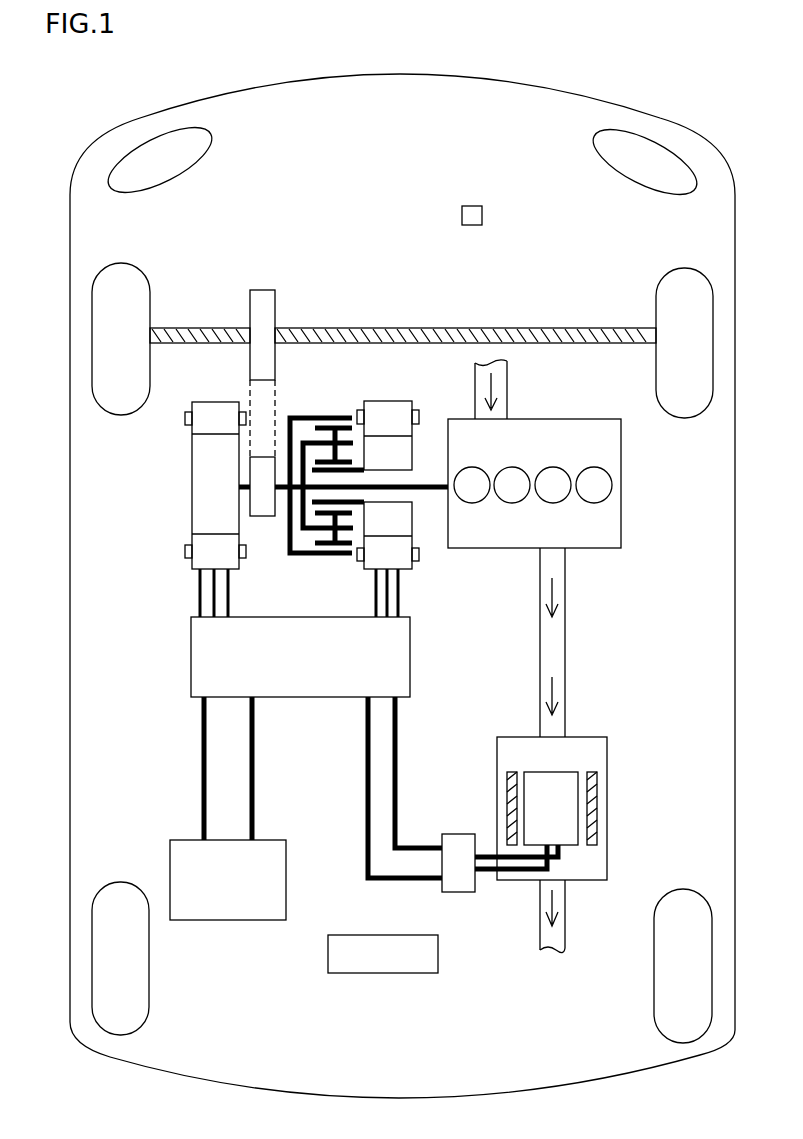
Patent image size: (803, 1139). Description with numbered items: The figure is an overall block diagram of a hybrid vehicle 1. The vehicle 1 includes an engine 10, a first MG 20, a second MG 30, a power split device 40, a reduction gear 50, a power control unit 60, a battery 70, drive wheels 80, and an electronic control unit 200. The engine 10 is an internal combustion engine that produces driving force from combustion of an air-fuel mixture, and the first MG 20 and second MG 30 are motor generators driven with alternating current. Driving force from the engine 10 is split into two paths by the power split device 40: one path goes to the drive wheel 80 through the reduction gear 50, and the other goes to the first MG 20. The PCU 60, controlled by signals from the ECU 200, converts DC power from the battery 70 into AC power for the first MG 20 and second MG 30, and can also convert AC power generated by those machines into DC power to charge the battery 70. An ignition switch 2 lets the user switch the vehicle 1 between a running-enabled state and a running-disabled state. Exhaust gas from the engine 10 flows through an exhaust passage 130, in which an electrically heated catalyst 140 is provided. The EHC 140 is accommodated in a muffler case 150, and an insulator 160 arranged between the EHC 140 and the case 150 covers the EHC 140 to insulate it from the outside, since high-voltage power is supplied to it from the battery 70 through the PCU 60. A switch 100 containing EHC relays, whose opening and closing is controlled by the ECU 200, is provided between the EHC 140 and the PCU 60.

The vehicle 1 is at (412, 62).
The ignition switch 2 is at (471, 206).
The engine 10 is at (562, 419).
The first MG 20 is at (386, 401).
The second MG 30 is at (216, 402).
The power split device 40 is at (324, 418).
The reduction gear 50 is at (264, 290).
The power control unit 60 is at (191, 650).
The battery 70 is at (287, 878).
The drive wheel 80 is at (121, 263).
The switch 100 is at (459, 892).
The exhaust passage 130 is at (567, 700).
The electrically heated catalyst 140 is at (568, 772).
The muffler case 150 is at (608, 852).
The insulator 160 is at (508, 796).
The electronic control unit 200 is at (380, 975).